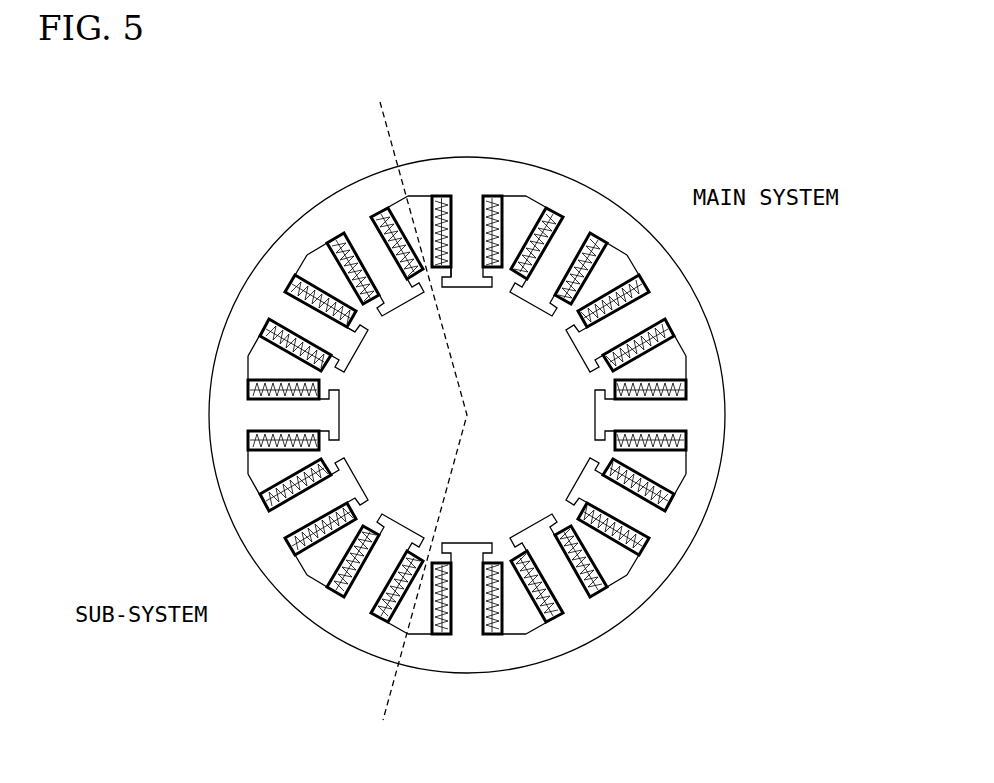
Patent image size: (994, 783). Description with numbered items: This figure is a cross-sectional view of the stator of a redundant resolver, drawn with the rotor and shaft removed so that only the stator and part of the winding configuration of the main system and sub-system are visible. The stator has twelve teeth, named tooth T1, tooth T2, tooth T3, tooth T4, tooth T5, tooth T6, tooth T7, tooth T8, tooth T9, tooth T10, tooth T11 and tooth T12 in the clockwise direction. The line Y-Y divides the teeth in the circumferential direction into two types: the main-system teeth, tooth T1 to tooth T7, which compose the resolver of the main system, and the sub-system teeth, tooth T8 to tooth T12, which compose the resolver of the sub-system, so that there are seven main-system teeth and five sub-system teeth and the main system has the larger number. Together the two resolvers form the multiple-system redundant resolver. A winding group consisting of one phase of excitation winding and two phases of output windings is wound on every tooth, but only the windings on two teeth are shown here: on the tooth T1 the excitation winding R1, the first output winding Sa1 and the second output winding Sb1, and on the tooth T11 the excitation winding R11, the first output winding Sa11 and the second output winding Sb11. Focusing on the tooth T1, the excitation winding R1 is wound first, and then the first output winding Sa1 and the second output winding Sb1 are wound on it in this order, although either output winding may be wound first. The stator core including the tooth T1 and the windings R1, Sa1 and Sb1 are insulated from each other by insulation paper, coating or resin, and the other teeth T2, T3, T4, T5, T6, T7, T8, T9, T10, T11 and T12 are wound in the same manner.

The tooth T1 is at (467, 229).
The tooth T2 is at (568, 256).
The tooth T3 is at (626, 313).
The tooth T4 is at (652, 415).
The tooth T5 is at (626, 516).
The tooth T6 is at (568, 574).
The tooth T7 is at (467, 601).
The tooth T8 is at (365, 574).
The tooth T9 is at (308, 516).
The tooth T10 is at (276, 415).
The tooth T11 is at (308, 313).
The tooth T12 is at (365, 256).
The first output winding Sa1 is at (443, 196).
The second output winding Sb1 is at (436, 196).
The excitation winding R1 is at (458, 200).
The first output winding Sa11 is at (287, 288).
The second output winding Sb11 is at (292, 280).
The excitation winding R11 is at (290, 291).
The line Y- Y is at (378, 412).